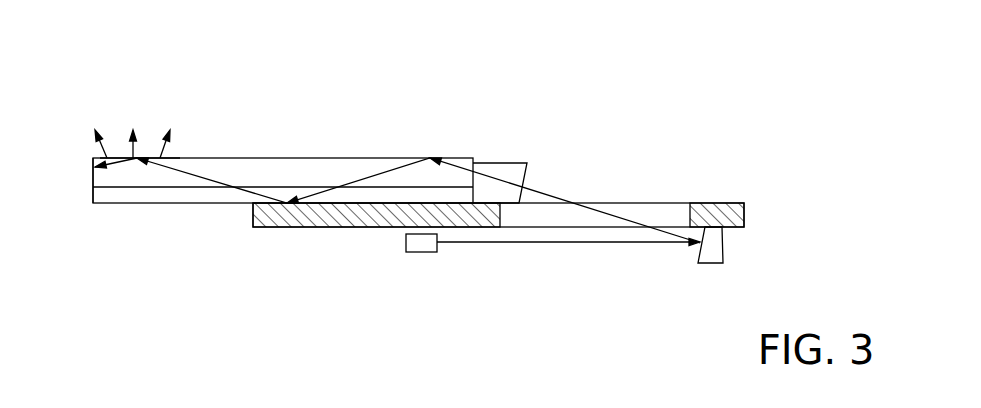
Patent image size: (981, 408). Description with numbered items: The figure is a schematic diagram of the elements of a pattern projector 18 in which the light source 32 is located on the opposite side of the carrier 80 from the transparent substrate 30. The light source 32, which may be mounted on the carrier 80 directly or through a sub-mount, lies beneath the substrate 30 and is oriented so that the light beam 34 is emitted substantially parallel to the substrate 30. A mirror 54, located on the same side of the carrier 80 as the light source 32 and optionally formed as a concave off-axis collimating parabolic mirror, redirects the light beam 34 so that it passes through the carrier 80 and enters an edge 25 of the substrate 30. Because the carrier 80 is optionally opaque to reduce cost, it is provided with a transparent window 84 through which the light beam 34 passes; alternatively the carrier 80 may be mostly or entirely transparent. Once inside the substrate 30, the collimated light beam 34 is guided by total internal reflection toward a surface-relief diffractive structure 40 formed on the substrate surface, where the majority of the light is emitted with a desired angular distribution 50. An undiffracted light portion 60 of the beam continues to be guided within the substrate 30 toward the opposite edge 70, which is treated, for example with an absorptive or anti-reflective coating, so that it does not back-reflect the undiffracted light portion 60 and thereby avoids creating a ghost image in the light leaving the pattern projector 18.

The pattern projector 18 is at (770, 70).
The transparent substrate 30 is at (280, 158).
The edge of substrate 25 is at (503, 163).
The carrier 80 is at (744, 213).
The transparent window 84 is at (649, 203).
The mirror 54 is at (705, 263).
The light source 32 is at (425, 252).
The light beam 34 is at (547, 193).
The undiffracted light portion 60 is at (121, 165).
The edge of substrate 70 is at (92, 185).
The angular distribution 50 is at (133, 130).
The surface-relief diffractive structure 40 is at (165, 158).